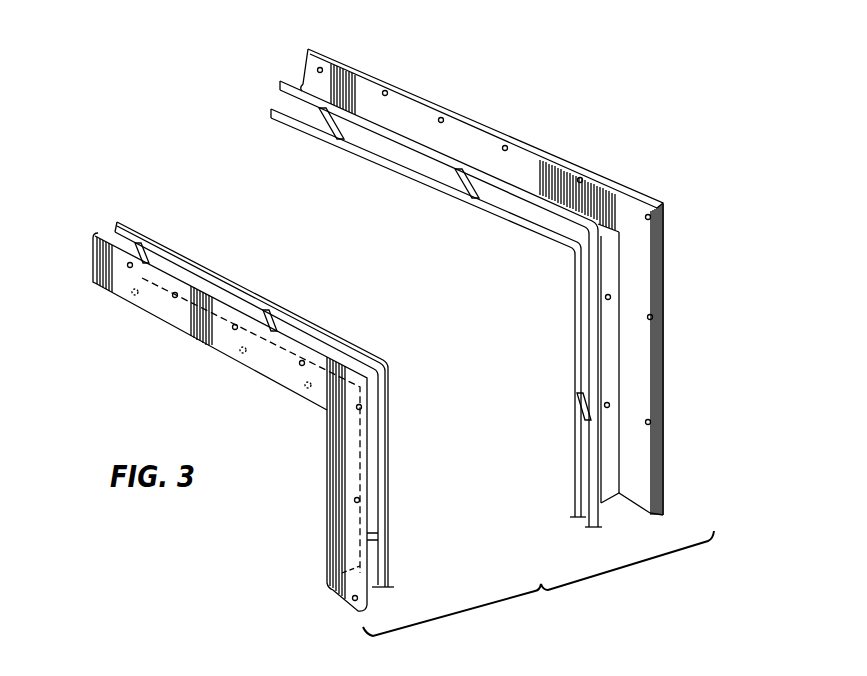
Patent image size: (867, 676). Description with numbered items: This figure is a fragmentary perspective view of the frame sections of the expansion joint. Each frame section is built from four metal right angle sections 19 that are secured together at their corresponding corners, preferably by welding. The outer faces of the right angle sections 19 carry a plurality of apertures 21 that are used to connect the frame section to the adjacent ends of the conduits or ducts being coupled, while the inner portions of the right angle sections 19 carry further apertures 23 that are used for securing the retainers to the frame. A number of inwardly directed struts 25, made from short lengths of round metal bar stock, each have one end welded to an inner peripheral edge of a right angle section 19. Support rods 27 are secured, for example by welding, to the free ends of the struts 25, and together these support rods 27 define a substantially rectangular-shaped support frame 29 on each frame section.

The right angle section 19 is at (492, 150).
The apertures 21 is at (386, 90).
The apertures 23 is at (135, 296).
The strut 25 is at (327, 137).
The support rod 27 is at (410, 138).
The support frame 29 is at (527, 229).